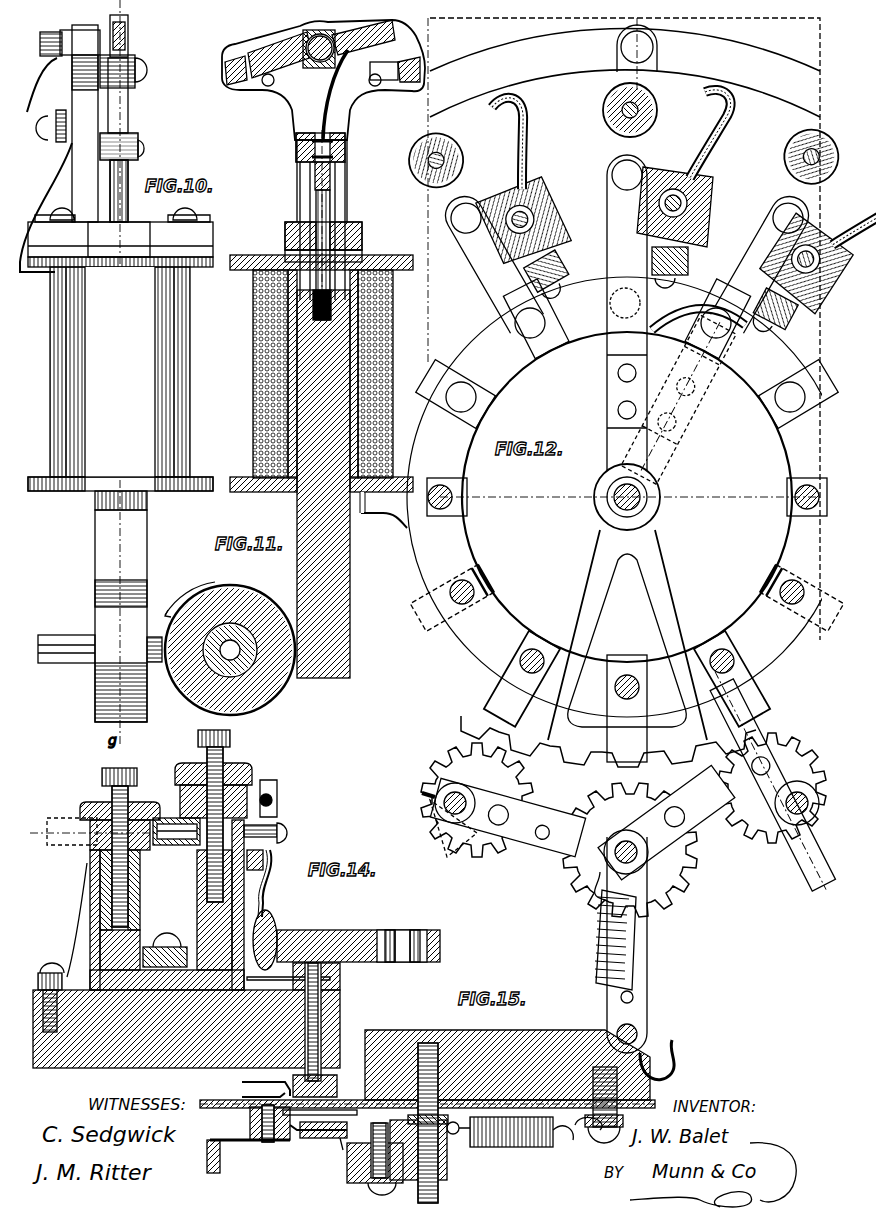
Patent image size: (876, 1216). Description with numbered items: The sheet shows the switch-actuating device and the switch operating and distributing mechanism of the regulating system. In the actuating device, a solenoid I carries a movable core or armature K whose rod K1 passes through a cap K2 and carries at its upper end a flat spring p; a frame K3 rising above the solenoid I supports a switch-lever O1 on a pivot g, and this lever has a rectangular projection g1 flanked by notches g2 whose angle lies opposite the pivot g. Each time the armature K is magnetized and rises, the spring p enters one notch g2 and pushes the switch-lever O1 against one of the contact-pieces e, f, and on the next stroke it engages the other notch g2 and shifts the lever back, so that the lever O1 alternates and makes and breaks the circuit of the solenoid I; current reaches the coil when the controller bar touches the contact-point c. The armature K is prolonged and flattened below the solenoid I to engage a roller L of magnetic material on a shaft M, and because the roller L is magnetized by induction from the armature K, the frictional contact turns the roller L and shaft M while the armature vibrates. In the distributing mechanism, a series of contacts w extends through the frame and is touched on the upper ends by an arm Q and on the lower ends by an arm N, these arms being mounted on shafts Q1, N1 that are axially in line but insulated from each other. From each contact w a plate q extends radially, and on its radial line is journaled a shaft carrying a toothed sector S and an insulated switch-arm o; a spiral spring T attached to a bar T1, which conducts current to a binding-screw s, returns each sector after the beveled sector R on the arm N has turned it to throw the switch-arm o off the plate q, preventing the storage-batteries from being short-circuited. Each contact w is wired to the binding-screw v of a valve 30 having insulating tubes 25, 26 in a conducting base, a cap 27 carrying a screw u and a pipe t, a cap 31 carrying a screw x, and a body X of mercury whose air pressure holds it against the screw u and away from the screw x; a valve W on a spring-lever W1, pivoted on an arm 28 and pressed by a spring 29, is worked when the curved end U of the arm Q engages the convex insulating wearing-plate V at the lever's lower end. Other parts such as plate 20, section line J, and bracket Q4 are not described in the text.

In FIG. 10, the switch-lever O1 is at (128, 28).
In FIG. 11, the switch-lever O1 is at (410, 19).
In FIG. 10, the frame K3 is at (85, 123).
In FIG. 11, the frame K3 is at (350, 110).
In FIG. 10, the pivot g is at (40, 48).
In FIG. 11, the pivot g is at (305, 36).
In FIG. 12, the pivot g is at (637, 33).
In FIG. 15, the pivot g is at (604, 1112).
In FIG. 10, the contact-piece e is at (145, 70).
In FIG. 10, the flat spring p is at (130, 104).
In FIG. 11, the flat spring p is at (327, 100).
In FIG. 10, the rod K1 is at (128, 212).
In FIG. 11, the rod K1 is at (331, 186).
In FIG. 10, the cap K2 is at (120, 244).
In FIG. 11, the cap K2 is at (363, 232).
In FIG. 10, the solenoid I is at (120, 372).
In FIG. 11, the solenoid I is at (385, 380).
In FIG. 10, the armature K is at (121, 616).
In FIG. 11, the armature K is at (323, 484).
In FIG. 14, the armature K is at (290, 833).
In FIG. 10, the shaft M is at (40, 640).
In FIG. 10, the roller L is at (230, 648).
In FIG. 11, the contact-point c is at (236, 56).
In FIG. 11, the contact-piece f is at (395, 55).
In FIG. 11, the rectangular projection g1 is at (305, 95).
In FIG. 11, the notches g2 is at (326, 72).
In FIG. 12, the arm Q is at (627, 312).
In FIG. 14, the arm Q is at (393, 930).
In FIG. 12, the shaft Q1 is at (612, 490).
In FIG. 12, the arm N is at (679, 397).
In FIG. 15, the arm N is at (248, 1139).
In FIG. 12, the shaft N1 is at (640, 503).
In FIG. 12, the binding-screw v is at (627, 246).
In FIG. 12, the screw x is at (660, 95).
In FIG. 14, the screw x is at (125, 905).
In FIG. 12, the cap 31 is at (600, 108).
In FIG. 14, the cap 31 is at (80, 815).
In FIG. 12, the pipe t is at (525, 122).
In FIG. 14, the pipe t is at (176, 843).
In FIG. 12, the valve 30 is at (572, 169).
In FIG. 14, the valve 30 is at (186, 1029).
In FIG. 12, the cap 27 is at (712, 200).
In FIG. 14, the cap 27 is at (180, 808).
In FIG. 12, the valve W is at (770, 298).
In FIG. 14, the valve W is at (255, 864).
In FIG. 12, the convex wearing-plate V is at (691, 300).
In FIG. 14, the convex wearing-plate V is at (272, 920).
In FIG. 12, the curved end U is at (698, 303).
In FIG. 14, the curved end U is at (305, 930).
In FIG. 12, the plate 20 is at (612, 302).
In FIG. 14, the plate 20 is at (340, 1010).
In FIG. 15, the plate 20 is at (500, 1048).
In FIG. 12, the contacts w is at (623, 503).
In FIG. 12, the plate q is at (626, 503).
In FIG. 15, the plate q is at (291, 1118).
In FIG. 12, the switch-arm o is at (627, 646).
In FIG. 15, the switch-arm o is at (338, 1149).
In FIG. 12, the beveled sector R is at (608, 741).
In FIG. 12, the toothed sector S is at (623, 825).
In FIG. 15, the toothed sector S is at (375, 1161).
In FIG. 12, the screw u is at (628, 843).
In FIG. 14, the screw u is at (145, 947).
In FIG. 12, the spiral spring T is at (714, 827).
In FIG. 15, the spiral spring T is at (500, 1150).
In FIG. 12, the bar T1 is at (648, 980).
In FIG. 15, the bar T1 is at (512, 1112).
In FIG. 12, the binding-screw s is at (640, 1034).
In FIG. 14, the body of mercury X is at (167, 905).
In FIG. 14, the shaft J is at (99, 829).
In FIG. 14, the arm 28 is at (274, 792).
In FIG. 14, the spring 29 is at (278, 800).
In FIG. 14, the spring-lever W1 is at (270, 895).
In FIG. 14, the bracket Q4 is at (340, 972).
In FIG. 14, the tube 26 is at (136, 925).
In FIG. 14, the tube 25 is at (205, 900).
In FIG. 15, the tube 25 is at (419, 1129).